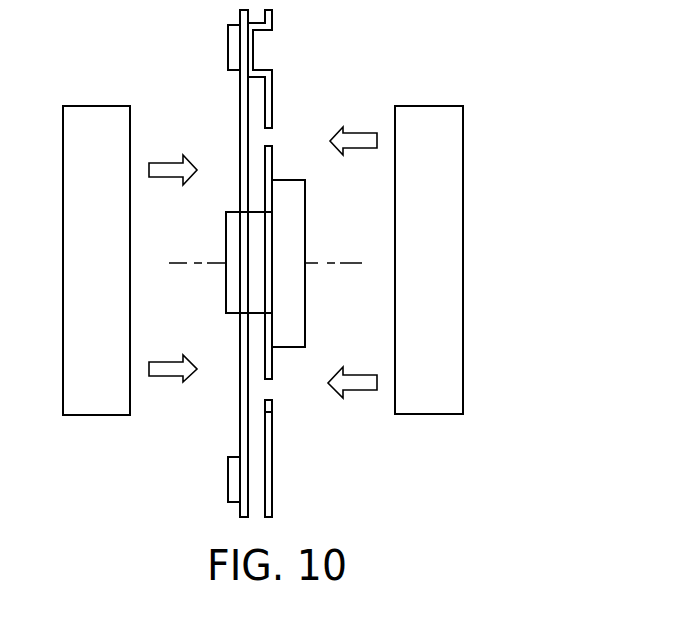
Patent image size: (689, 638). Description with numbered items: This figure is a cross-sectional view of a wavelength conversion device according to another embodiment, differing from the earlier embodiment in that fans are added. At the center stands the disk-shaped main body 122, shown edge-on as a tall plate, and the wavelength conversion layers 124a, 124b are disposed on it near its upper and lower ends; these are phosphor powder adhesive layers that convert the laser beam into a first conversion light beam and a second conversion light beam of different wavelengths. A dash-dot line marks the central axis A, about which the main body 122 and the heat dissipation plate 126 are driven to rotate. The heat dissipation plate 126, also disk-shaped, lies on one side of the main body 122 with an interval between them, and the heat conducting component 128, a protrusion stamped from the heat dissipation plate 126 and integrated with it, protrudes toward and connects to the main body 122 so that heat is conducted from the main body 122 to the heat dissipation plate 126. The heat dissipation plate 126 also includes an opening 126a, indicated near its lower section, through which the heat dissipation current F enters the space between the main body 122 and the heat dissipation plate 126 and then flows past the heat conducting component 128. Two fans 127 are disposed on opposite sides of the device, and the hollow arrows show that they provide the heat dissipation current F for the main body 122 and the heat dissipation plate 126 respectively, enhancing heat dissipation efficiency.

The main body 122 is at (246, 100).
The wavelength conversion layer 124a is at (234, 37).
The wavelength conversion layer 124b is at (232, 478).
The heat dissipation plate 126 is at (267, 98).
The opening 126a is at (268, 410).
The fan 127 is at (450, 173).
The heat conducting component 128 is at (250, 45).
The heat dissipation current F is at (360, 140).
The central axis A is at (343, 265).